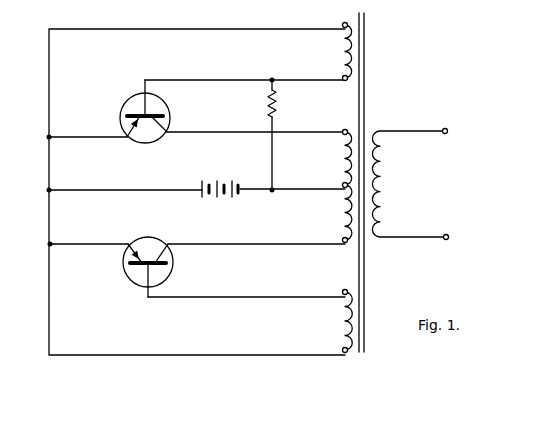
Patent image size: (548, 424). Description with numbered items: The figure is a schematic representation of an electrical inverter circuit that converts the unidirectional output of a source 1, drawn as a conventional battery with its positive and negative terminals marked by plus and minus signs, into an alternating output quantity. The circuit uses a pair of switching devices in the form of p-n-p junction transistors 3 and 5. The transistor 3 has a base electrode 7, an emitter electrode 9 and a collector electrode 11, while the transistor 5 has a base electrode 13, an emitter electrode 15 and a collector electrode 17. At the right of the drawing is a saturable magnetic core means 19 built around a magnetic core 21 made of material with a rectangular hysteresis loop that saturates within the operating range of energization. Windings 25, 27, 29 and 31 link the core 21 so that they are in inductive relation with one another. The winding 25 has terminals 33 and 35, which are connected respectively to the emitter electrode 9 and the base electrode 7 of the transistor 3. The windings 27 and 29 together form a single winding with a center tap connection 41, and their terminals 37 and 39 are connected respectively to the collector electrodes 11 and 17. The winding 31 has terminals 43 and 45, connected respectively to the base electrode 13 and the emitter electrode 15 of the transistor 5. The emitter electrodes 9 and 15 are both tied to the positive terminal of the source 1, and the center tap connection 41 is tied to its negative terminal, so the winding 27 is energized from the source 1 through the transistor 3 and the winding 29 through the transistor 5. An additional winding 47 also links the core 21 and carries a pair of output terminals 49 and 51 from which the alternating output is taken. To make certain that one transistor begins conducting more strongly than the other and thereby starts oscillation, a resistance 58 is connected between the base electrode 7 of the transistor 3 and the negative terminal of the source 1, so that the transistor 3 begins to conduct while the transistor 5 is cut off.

The source of unidirectional voltage 1 is at (220, 180).
The transistor 3 is at (150, 111).
The transistor 5 is at (151, 268).
The base electrode 7 is at (124, 107).
The emitter electrode 9 is at (120, 125).
The collector electrode 11 is at (172, 124).
The base electrode 13 is at (129, 280).
The emitter electrode 15 is at (128, 254).
The collector electrode 17 is at (173, 251).
The saturable magnetic core means 19 is at (402, 182).
The magnetic core 21 is at (366, 80).
The winding 25 is at (345, 52).
The winding 27 is at (345, 158).
The winding 29 is at (345, 212).
The winding 31 is at (345, 320).
The terminal 33 is at (344, 23).
The terminal 35 is at (344, 81).
The terminal 37 is at (344, 129).
The terminal 39 is at (344, 243).
The center tap connection 41 is at (343, 184).
The terminal 43 is at (344, 290).
The terminal 45 is at (344, 353).
The winding 47 is at (374, 185).
The output terminal 49 is at (447, 130).
The output terminal 51 is at (448, 238).
The resistance 58 is at (277, 103).